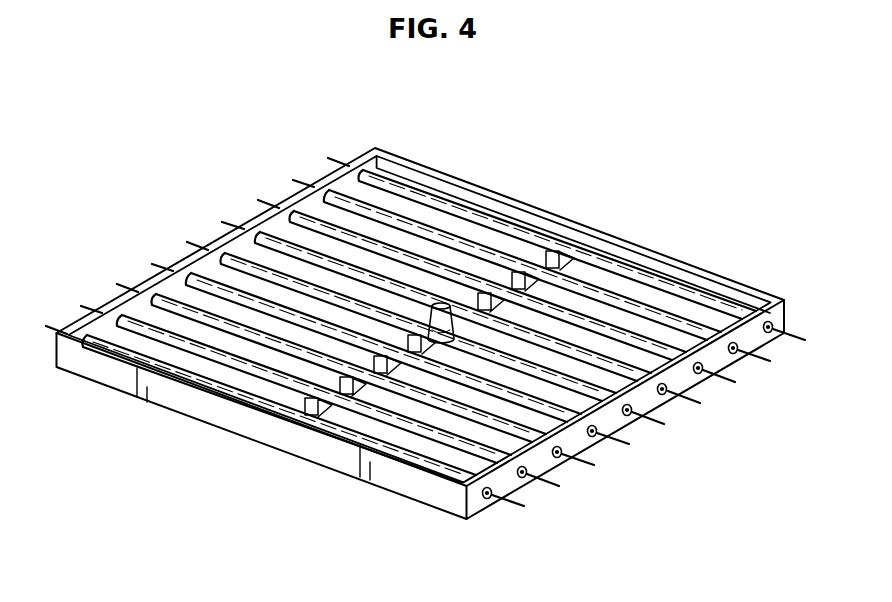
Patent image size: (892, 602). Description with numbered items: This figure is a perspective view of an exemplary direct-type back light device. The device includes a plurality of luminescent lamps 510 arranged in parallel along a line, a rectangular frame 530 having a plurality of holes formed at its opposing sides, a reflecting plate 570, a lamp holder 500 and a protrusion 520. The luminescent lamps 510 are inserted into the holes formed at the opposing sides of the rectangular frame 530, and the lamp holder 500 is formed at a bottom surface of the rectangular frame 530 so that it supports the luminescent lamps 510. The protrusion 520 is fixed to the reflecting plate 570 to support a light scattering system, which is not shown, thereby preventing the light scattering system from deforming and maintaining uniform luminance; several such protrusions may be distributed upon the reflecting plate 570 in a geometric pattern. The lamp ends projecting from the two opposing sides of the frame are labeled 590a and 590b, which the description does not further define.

The lamp holder 500 is at (307, 418).
The luminescent lamps 510 is at (257, 378).
The protrusion 520 is at (427, 337).
The rectangular frame 530 is at (427, 491).
The reflecting plate 570 is at (187, 331).
The left end pins 590a is at (50, 333).
The right end pins 590b is at (513, 503).